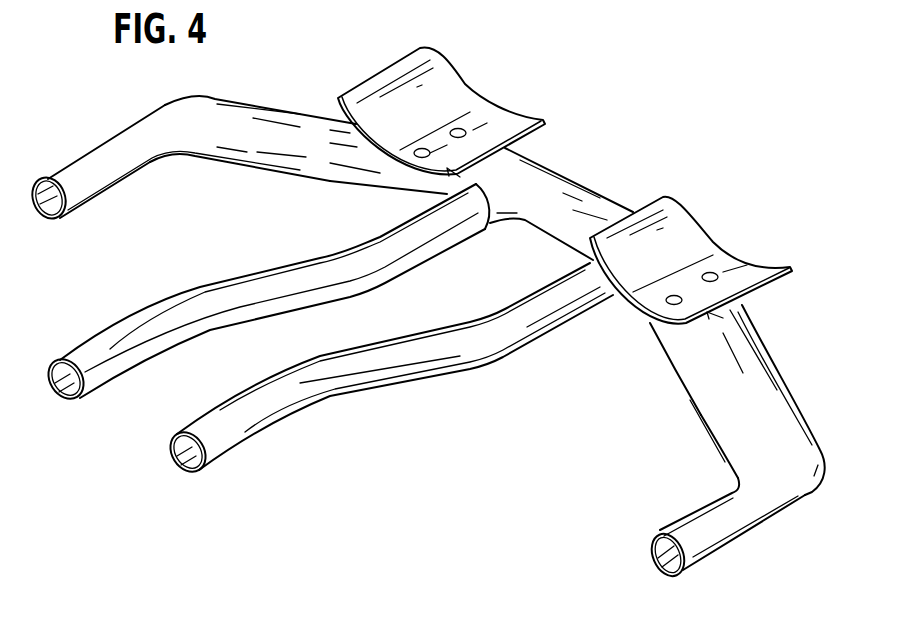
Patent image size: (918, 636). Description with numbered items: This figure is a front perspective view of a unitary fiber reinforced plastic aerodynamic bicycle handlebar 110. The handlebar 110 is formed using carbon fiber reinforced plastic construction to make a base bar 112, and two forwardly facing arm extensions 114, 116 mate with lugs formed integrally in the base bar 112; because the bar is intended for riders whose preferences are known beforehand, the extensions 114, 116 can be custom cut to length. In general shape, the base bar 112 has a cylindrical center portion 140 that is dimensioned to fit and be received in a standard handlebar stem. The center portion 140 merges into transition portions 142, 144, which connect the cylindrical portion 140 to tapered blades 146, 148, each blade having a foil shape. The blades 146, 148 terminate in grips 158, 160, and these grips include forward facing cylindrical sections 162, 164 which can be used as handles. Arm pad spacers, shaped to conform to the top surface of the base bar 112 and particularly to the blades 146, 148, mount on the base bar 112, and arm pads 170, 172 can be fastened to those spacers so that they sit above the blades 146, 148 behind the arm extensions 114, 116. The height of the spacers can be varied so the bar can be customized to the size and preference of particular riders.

The handlebar 110 is at (672, 325).
The base bar 112 is at (730, 381).
The arm extension 114 is at (150, 360).
The arm extension 116 is at (322, 402).
The cylindrical center portion 140 is at (593, 210).
The transition portion 142 is at (370, 157).
The transition portion 144 is at (627, 303).
The tapered blade 146 is at (292, 112).
The tapered blade 148 is at (777, 420).
The grip 158 is at (118, 170).
The grip 160 is at (697, 563).
The forward facing cylindrical section 162 is at (89, 163).
The forward facing cylindrical section 164 is at (703, 510).
The arm pad 170 is at (443, 103).
The arm pad 172 is at (680, 242).